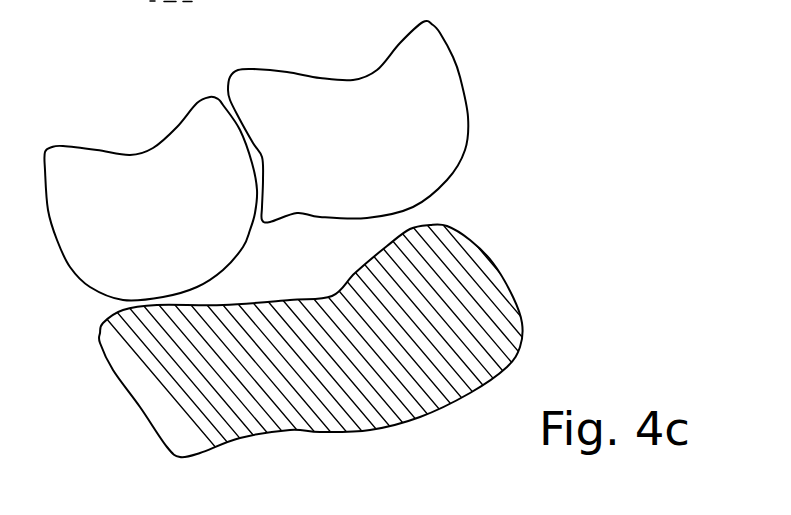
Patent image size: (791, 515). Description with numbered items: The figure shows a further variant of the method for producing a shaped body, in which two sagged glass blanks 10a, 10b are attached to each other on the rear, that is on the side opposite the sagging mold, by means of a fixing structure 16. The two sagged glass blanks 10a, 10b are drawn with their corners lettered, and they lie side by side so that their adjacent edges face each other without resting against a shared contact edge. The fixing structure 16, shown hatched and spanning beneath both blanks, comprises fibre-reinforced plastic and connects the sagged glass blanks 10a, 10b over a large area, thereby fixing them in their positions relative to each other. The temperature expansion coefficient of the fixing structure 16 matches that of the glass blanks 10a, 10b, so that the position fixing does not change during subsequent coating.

The sagged glass blank 10a is at (89, 172).
The sagged glass blank 10b is at (317, 97).
The fixing structure 16 is at (473, 277).